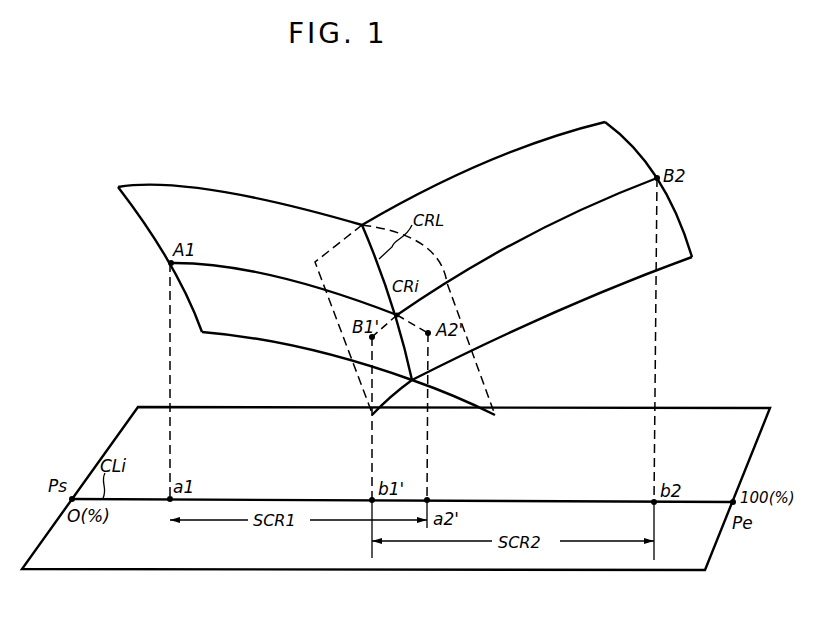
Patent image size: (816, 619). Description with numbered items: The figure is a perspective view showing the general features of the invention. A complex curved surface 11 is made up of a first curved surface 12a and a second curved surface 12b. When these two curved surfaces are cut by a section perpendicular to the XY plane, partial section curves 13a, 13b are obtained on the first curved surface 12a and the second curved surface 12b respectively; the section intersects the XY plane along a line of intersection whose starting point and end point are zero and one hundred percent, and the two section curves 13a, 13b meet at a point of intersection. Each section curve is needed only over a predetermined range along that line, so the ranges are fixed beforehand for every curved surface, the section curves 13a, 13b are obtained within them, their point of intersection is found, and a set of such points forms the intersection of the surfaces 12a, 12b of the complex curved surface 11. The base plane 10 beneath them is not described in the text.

The base plane (reference plane) 10 is at (700, 410).
The complex curved surface 11 is at (366, 195).
The first curved surface 12a is at (229, 194).
The second curved surface 12b is at (485, 173).
The partial section curve 13a is at (243, 265).
The partial section curve 13b is at (537, 236).